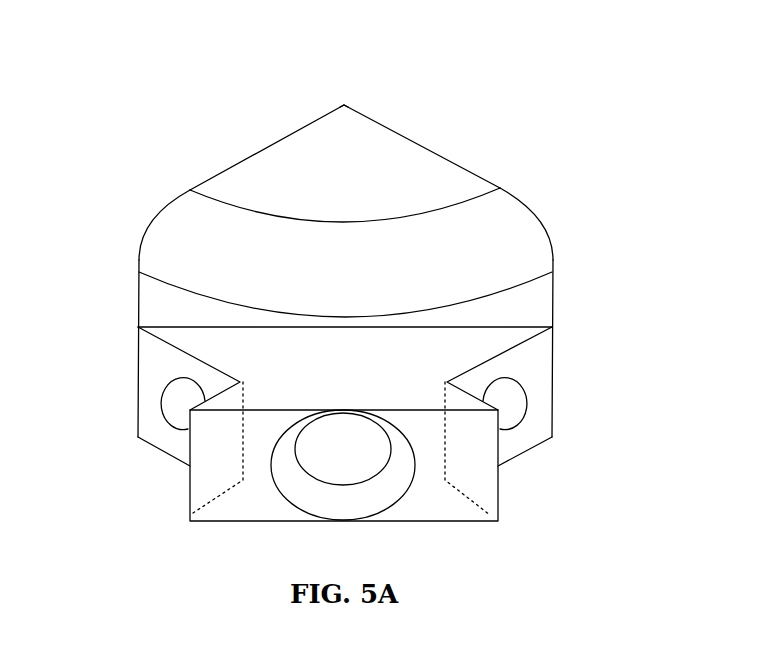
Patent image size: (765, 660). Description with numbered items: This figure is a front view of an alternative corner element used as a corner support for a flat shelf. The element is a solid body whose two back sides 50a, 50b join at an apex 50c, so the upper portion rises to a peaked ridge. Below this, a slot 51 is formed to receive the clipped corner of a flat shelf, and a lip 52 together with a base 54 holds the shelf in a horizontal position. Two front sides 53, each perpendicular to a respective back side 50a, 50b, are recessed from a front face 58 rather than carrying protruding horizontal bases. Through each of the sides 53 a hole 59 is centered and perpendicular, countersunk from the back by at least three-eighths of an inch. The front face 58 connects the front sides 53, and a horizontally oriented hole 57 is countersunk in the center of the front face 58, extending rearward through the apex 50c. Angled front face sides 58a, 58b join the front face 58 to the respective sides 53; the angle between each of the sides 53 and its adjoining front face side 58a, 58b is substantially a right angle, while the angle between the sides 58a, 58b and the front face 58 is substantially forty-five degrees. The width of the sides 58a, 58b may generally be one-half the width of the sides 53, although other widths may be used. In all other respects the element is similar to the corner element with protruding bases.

The back side 50a is at (272, 138).
The back side 50b is at (418, 142).
The apex 50c is at (344, 105).
The slot 51 is at (512, 310).
The lip 52 is at (475, 240).
The front side 53 is at (153, 355).
The base 54 is at (280, 353).
The horizontally oriented hole 57 is at (340, 468).
The front face 58 is at (225, 522).
The front face side 58a is at (208, 455).
The front face side 58b is at (473, 455).
The hole 59 is at (180, 400).